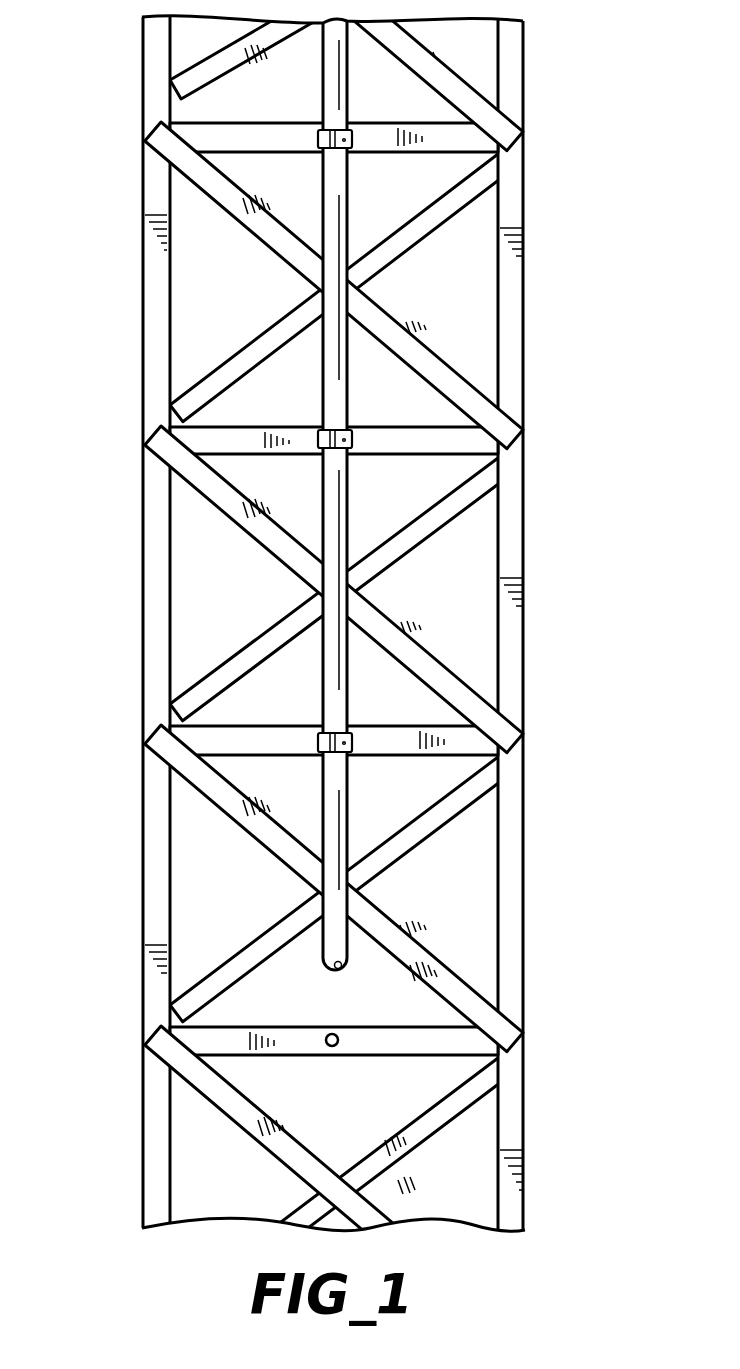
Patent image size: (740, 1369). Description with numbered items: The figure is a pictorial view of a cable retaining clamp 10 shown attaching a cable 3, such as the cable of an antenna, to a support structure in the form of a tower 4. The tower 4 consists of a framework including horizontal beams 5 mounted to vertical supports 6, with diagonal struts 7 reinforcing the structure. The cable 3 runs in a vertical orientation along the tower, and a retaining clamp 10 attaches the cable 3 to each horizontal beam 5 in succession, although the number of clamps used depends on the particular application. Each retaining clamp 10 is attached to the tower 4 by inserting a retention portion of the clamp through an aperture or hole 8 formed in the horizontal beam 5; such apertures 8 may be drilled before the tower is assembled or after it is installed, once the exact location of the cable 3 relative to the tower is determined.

The cable 3 is at (335, 528).
The tower 4 is at (335, 632).
The horizontal beam 5 is at (248, 432).
The vertical support 6 is at (150, 920).
The diagonal strut 7 is at (212, 500).
The aperture 8 is at (338, 1046).
The cable retaining clamp 10 is at (318, 137).